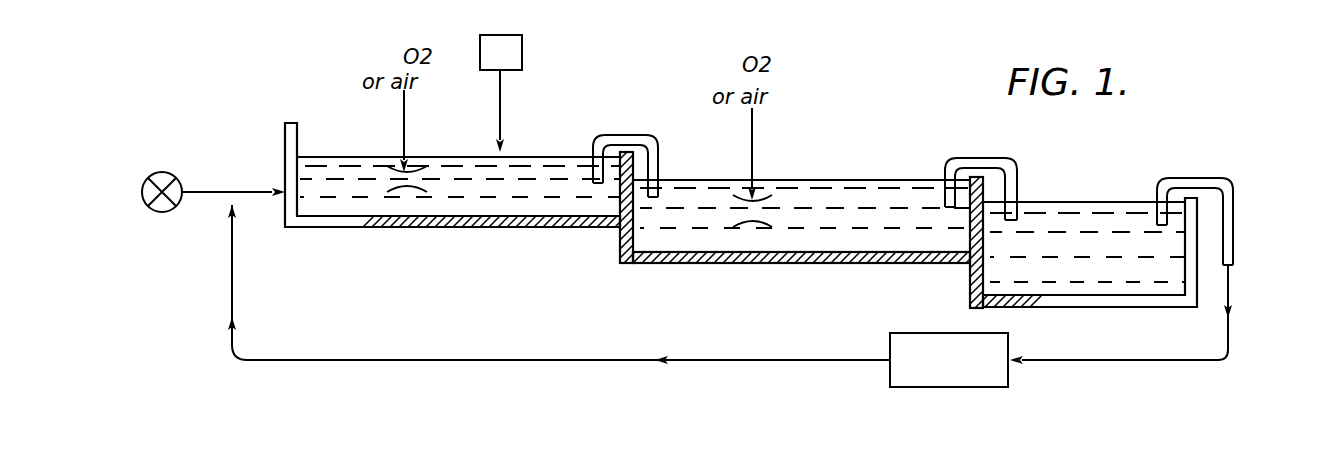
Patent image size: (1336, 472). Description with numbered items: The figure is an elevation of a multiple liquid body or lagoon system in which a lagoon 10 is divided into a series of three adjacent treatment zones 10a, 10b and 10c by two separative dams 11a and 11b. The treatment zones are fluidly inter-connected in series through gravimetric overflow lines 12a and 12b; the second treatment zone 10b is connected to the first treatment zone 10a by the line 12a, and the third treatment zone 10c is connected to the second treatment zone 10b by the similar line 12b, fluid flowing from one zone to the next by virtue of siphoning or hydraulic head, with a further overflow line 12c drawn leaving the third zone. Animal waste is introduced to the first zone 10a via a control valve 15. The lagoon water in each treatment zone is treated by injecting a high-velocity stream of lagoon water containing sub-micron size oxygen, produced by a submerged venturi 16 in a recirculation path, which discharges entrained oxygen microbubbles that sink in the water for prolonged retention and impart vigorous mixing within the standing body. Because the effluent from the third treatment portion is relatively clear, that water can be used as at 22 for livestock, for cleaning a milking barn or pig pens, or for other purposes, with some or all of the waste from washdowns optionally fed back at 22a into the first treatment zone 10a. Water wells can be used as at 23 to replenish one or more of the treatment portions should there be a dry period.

The lagoon 10 is at (856, 134).
The first treatment zone 10a is at (463, 193).
The second treatment zone 10b is at (803, 229).
The third treatment zone 10c is at (1078, 268).
The separative dam 11a is at (622, 190).
The separative dam 11b is at (972, 222).
The gravimetric overflow line 12a is at (628, 135).
The gravimetric overflow line 12b is at (993, 158).
The third siphon overflow tube 12c is at (1210, 178).
The control valve 15 is at (155, 172).
The submerged venturi 16 is at (402, 208).
The effluent use 22 is at (953, 365).
The washdown feedback 22a is at (507, 361).
The water well 23 is at (522, 55).